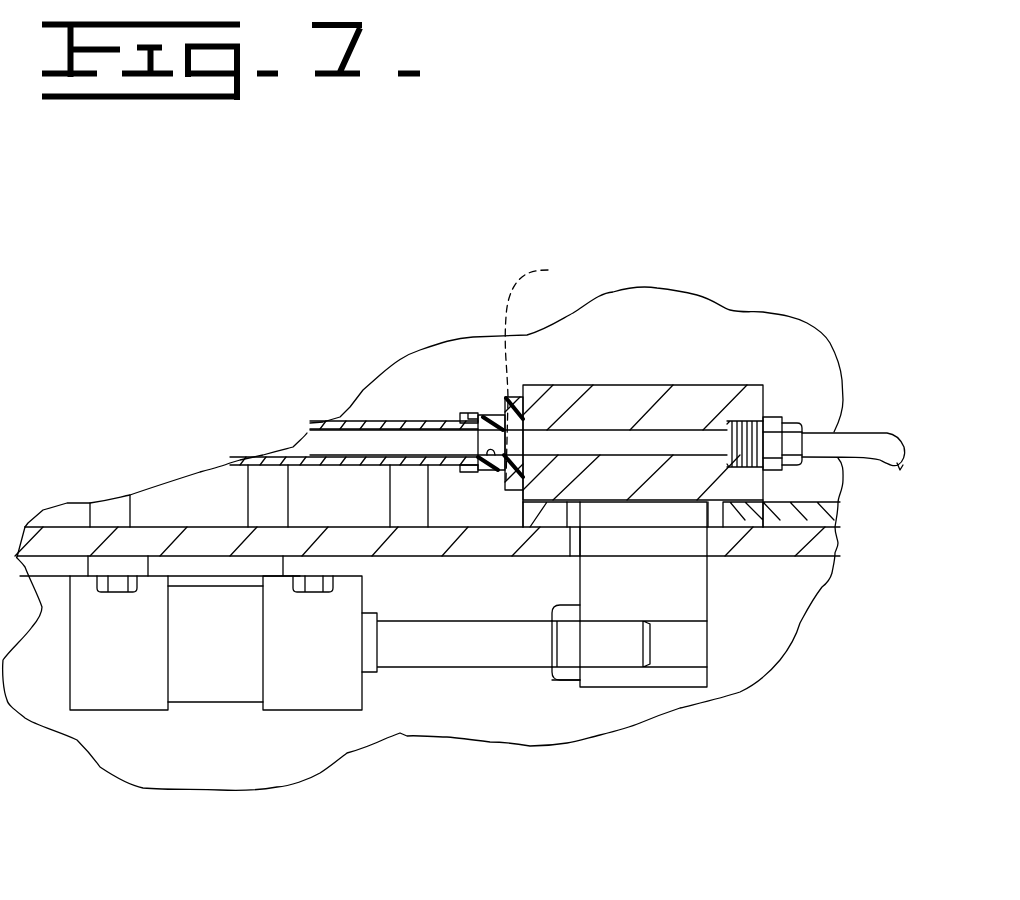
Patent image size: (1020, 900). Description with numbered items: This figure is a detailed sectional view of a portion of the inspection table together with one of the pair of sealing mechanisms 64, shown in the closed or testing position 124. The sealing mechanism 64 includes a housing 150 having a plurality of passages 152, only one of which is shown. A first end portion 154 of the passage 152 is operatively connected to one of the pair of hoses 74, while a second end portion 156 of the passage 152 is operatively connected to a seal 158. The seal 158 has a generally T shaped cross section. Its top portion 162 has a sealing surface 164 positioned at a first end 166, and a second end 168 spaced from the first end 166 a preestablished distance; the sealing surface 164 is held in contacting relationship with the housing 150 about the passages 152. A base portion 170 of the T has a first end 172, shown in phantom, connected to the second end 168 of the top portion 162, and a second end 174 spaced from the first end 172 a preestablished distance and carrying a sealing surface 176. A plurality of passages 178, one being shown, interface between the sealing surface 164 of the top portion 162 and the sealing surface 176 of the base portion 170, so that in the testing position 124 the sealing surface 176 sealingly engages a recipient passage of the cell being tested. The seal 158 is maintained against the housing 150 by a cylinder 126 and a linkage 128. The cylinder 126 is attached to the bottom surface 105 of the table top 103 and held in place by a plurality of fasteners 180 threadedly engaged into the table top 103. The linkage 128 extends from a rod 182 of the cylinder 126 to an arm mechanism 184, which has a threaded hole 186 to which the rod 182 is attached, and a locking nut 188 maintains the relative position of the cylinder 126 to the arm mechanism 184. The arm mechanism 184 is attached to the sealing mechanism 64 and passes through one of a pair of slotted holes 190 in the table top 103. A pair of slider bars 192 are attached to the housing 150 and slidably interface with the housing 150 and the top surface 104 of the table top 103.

The sealing mechanism 64 is at (637, 385).
The hose 74 is at (866, 433).
The table top 103 is at (840, 541).
The top surface 104 is at (200, 527).
The bottom surface 105 is at (823, 582).
The closed or testing position 124 is at (730, 288).
The cylinder 126 is at (230, 657).
The linkage 128 is at (708, 603).
The housing 150 is at (758, 385).
The passage 152 is at (690, 400).
The first end portion 154 is at (705, 457).
The second end portion 156 is at (585, 385).
The seal 158 is at (494, 413).
The top portion 162 is at (515, 397).
The sealing surface 164 is at (503, 530).
The first end 166 is at (527, 468).
The second end 168 is at (505, 489).
The base portion 170 is at (478, 415).
The first end 172 is at (545, 369).
The second end 174 is at (463, 443).
The sealing surface 176 is at (460, 413).
The passage 178 is at (485, 473).
The fastener 180 is at (118, 592).
The rod 182 is at (457, 668).
The arm mechanism 184 is at (690, 567).
The threaded hole 186 is at (608, 621).
The locking nut 188 is at (563, 681).
The slotted hole 190 is at (737, 547).
The slider bar 192 is at (580, 502).